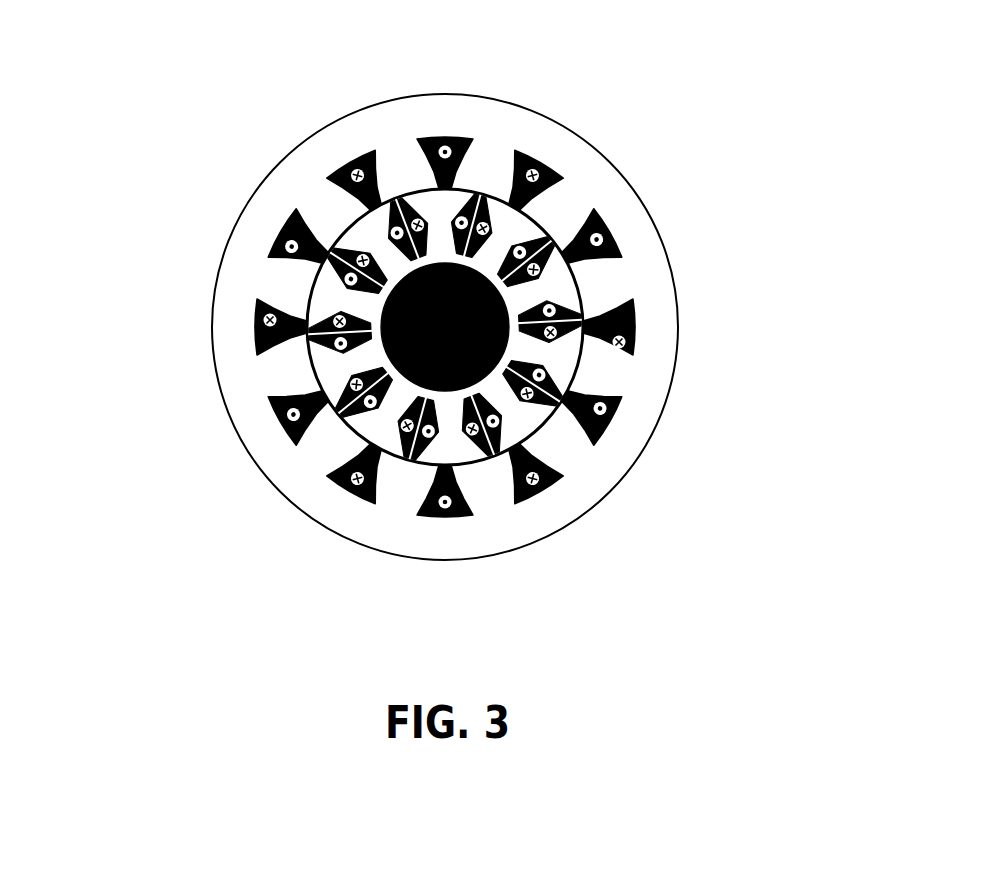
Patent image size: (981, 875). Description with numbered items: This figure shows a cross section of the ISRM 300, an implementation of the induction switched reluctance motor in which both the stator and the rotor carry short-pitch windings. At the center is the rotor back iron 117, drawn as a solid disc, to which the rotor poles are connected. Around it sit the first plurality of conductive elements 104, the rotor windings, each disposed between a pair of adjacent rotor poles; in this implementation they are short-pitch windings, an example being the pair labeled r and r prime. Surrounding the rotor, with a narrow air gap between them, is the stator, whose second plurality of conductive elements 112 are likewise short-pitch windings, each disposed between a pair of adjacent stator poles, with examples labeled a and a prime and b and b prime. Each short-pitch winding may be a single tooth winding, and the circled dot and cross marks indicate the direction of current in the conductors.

The ISRM 300 is at (731, 122).
The first plurality of conductive elements 104 is at (498, 228).
The second plurality of conductive elements 112 is at (617, 358).
The rotor back iron 117 is at (378, 313).